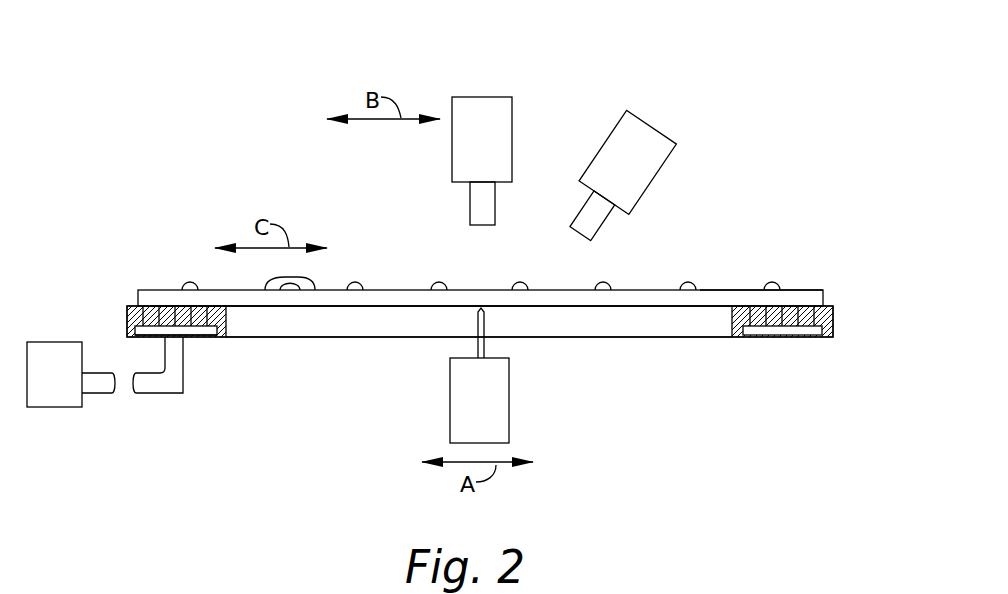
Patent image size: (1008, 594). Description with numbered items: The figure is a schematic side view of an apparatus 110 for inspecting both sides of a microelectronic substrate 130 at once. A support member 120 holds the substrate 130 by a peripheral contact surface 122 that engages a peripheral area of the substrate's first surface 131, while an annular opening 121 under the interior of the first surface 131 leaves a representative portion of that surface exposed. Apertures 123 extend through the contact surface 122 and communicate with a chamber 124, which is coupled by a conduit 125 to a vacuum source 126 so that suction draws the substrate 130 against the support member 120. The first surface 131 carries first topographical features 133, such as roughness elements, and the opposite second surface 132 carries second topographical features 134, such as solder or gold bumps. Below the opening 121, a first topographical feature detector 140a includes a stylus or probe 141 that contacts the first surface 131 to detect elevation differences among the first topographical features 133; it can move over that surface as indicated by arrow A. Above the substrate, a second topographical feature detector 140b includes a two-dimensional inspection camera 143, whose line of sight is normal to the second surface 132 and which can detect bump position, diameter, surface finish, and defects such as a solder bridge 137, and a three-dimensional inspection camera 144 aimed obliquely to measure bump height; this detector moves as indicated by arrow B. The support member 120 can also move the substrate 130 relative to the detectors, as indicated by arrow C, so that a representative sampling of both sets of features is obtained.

The apparatus 110 is at (796, 82).
The support member 120 is at (496, 318).
The opening 121 is at (343, 314).
The peripheral contact surface 122 is at (132, 306).
The apertures 123 is at (160, 305).
The chamber 124 is at (197, 336).
The conduit 125 is at (152, 395).
The vacuum source 126 is at (54, 350).
The microelectronic substrate 130 is at (824, 296).
The first surface 131 is at (708, 309).
The second surface 132 is at (735, 290).
The first topographical features 133 is at (670, 312).
The second topographical features 134 is at (607, 283).
The solder bridge 137 is at (293, 273).
The first topographical feature detector 140a is at (466, 389).
The second topographical feature detector 140b is at (636, 125).
The stylus or probe 141 is at (484, 318).
The two-dimensional inspection camera 143 is at (493, 108).
The three-dimensional inspection camera 144 is at (645, 130).